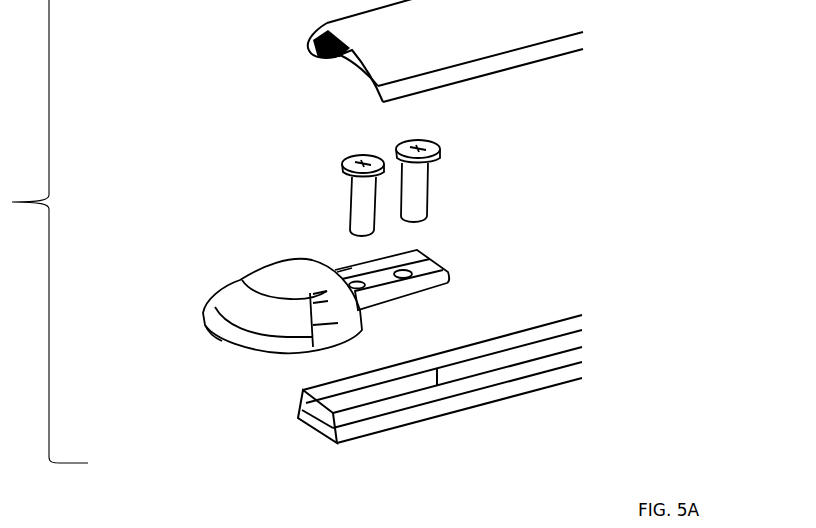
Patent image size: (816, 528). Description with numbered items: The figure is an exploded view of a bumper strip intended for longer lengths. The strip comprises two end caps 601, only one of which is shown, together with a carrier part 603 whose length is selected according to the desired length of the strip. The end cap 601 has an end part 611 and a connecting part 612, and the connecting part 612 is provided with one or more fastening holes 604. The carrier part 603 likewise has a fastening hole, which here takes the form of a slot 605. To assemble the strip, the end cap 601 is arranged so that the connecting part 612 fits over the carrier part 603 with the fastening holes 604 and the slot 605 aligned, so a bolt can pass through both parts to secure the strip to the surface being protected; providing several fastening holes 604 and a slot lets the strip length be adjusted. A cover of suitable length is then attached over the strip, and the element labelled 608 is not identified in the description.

The end cap 601 is at (240, 303).
The end part 611 is at (207, 331).
The connecting part 612 is at (340, 280).
The fastening hole 604 is at (433, 263).
The carrier part 603 is at (427, 420).
The slot 605 is at (300, 422).
The rail slot 608 is at (530, 350).